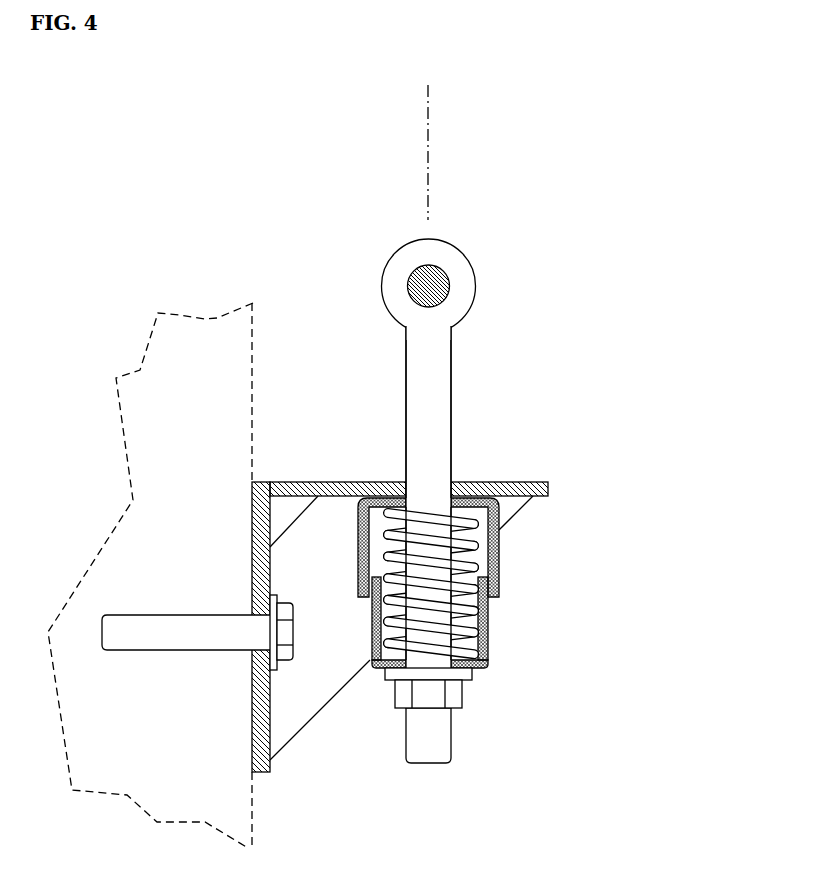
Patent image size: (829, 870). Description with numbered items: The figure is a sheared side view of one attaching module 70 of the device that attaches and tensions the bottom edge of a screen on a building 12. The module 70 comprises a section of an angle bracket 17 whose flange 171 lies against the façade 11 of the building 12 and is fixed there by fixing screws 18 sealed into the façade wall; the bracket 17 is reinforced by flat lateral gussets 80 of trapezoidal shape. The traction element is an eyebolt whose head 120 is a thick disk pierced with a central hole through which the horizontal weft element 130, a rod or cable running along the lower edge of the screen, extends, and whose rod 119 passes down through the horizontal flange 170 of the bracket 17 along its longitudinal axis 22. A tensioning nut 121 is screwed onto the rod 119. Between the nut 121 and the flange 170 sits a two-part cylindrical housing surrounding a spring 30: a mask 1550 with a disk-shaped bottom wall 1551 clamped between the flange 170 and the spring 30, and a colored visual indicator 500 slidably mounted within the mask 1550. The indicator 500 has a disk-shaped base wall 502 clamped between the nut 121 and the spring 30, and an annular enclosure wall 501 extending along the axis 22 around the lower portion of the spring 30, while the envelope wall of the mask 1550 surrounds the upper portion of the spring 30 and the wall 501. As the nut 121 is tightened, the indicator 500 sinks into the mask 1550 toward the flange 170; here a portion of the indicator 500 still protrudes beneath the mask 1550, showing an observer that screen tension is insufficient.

The longitudinal axis 22 is at (428, 113).
The weft element 130 is at (433, 268).
The head of eyebolt 120 is at (477, 282).
The attaching module 70 is at (495, 525).
The façade 11 is at (257, 404).
The building 12 is at (185, 416).
The bottom wall of mask 1551 is at (452, 500).
The horizontal flange 170 is at (523, 482).
The angle bracket 17 is at (432, 635).
The mask 1550 is at (500, 540).
The fixing screw 18 is at (172, 615).
The annular enclosure wall 501 is at (489, 608).
The spring 30 is at (473, 622).
The visual indicator 500 is at (457, 651).
The base wall of indicator 502 is at (380, 670).
The tensioning nut 121 is at (460, 708).
The lateral gusset 80 is at (285, 733).
The flange 171 is at (270, 773).
The rod 119 is at (408, 763).